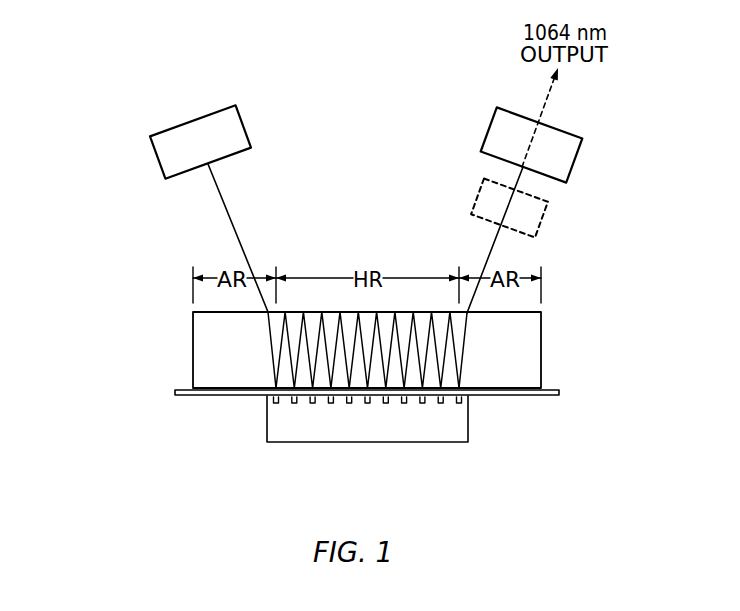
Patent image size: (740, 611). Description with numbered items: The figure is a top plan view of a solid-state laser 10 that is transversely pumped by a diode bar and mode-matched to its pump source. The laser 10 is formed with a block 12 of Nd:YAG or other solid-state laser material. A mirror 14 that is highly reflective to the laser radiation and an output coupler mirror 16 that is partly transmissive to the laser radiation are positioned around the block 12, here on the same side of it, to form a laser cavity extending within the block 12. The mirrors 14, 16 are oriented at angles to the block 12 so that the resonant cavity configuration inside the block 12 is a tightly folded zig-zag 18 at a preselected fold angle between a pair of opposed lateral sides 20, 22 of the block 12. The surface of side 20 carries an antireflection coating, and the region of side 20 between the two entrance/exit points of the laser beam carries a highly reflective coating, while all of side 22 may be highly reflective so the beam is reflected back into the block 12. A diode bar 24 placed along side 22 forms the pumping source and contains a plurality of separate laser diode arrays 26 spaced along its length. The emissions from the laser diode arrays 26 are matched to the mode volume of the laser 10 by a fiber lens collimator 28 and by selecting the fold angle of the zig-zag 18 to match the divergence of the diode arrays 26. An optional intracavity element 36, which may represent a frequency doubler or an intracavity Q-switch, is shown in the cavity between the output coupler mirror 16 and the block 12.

The solid-state laser 10 is at (100, 89).
The block 12 is at (199, 343).
The mirror 14 is at (157, 155).
The output coupler mirror 16 is at (486, 135).
The zig-zag 18 is at (273, 372).
The lateral side 20 is at (522, 313).
The lateral side 22 is at (535, 388).
The diode bar 24 is at (437, 434).
The laser diode arrays 26 is at (276, 403).
The fiber lens collimator 28 is at (556, 386).
The intracavity element 36 is at (544, 222).